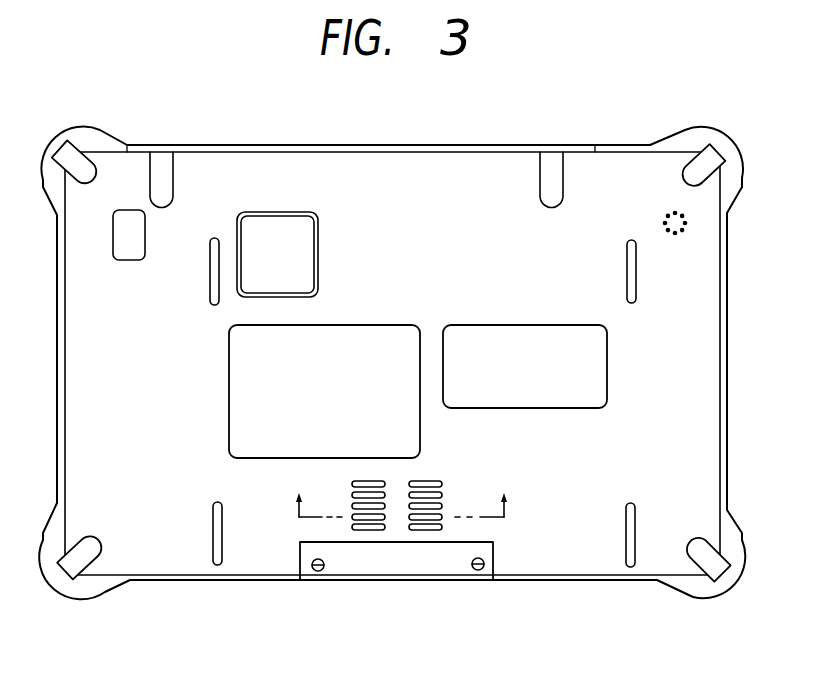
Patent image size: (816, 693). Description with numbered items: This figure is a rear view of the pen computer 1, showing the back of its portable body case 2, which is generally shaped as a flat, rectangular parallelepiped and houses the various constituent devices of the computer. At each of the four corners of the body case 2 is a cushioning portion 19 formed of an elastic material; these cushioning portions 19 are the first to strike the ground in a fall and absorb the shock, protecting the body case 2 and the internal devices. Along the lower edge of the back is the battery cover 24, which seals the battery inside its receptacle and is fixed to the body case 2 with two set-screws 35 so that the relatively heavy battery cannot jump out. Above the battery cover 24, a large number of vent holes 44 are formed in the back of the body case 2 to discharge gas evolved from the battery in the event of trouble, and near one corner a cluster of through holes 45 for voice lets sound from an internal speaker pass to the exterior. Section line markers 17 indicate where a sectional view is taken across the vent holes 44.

The pen computer 1 is at (368, 130).
The body case 2 is at (265, 167).
The cushioning portions 19 is at (92, 135).
The section line 17 is at (403, 502).
The battery cover 24 is at (412, 568).
The set-screws 35 is at (313, 571).
The vent holes 44 is at (443, 505).
The through holes for voice 45 is at (687, 222).